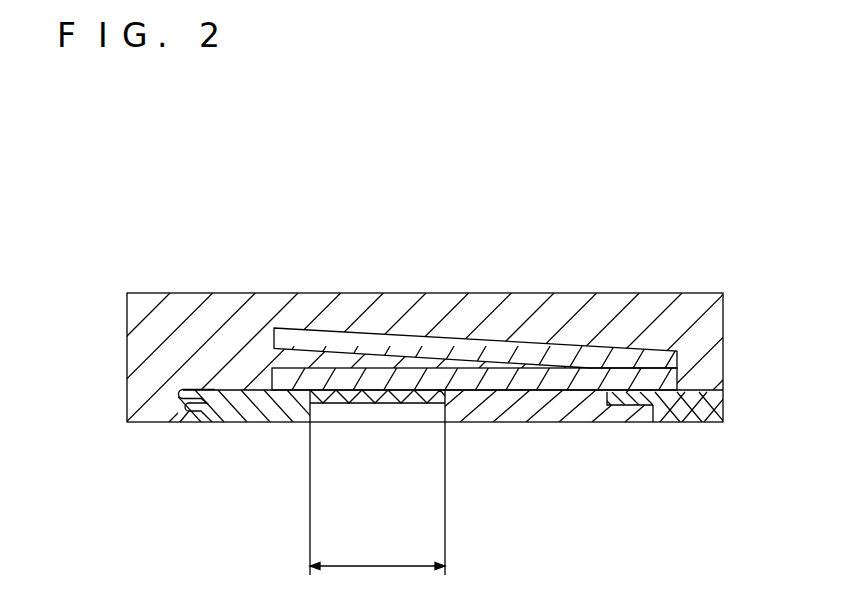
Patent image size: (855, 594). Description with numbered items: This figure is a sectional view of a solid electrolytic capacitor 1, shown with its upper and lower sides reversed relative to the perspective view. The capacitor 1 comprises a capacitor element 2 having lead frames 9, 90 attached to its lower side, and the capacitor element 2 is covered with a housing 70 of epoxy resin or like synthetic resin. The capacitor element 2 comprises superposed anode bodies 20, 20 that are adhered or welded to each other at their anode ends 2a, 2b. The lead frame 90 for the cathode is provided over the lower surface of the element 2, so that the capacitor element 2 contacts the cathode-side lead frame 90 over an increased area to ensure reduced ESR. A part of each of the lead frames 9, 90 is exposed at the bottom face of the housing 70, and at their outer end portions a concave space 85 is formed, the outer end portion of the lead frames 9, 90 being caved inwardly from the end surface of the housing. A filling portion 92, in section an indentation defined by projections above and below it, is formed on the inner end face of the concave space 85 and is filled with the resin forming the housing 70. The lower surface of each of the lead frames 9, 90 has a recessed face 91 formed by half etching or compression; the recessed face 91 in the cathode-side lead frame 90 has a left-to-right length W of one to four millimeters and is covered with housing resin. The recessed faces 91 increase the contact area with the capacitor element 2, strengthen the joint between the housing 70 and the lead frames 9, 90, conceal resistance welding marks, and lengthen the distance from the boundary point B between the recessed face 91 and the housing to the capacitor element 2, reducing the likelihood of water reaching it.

The solid electrolytic capacitor 1 is at (410, 335).
The capacitor element 2 is at (648, 152).
The anode end 2a is at (648, 358).
The second semiconductor chip 2b is at (418, 340).
The anode body 20 is at (515, 382).
The housing 70 is at (713, 320).
The concave space 85 is at (140, 398).
The lead frame for the cathode 90 is at (248, 405).
The recessed face 91 is at (403, 402).
The filling portion 92 is at (178, 399).
The lead frame 9 is at (672, 413).
The point B is at (300, 442).
The left-to-right length W is at (377, 552).